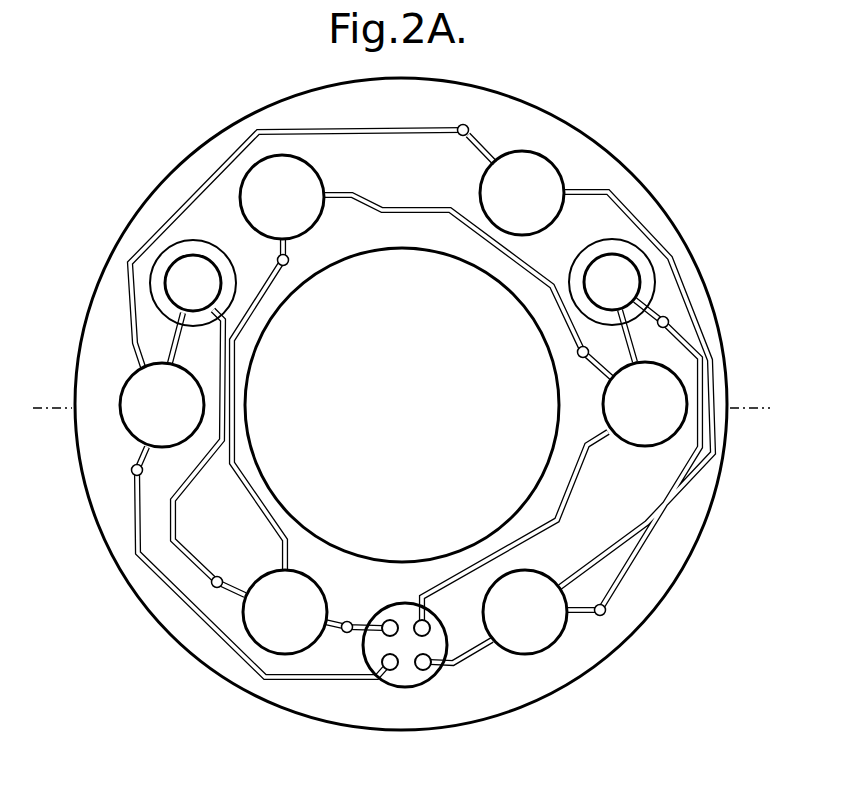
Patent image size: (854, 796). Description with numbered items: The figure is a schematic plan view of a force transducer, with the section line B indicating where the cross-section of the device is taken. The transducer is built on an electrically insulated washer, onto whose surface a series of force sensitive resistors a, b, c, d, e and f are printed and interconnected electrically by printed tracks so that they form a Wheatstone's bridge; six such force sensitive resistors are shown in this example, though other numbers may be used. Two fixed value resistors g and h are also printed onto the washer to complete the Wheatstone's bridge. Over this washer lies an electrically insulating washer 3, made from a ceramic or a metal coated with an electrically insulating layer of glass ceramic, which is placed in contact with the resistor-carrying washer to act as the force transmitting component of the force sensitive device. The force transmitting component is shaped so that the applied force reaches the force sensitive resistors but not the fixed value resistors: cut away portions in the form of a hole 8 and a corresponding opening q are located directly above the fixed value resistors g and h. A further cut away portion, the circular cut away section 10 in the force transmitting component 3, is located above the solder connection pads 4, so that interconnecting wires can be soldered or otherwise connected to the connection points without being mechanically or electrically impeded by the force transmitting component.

The electrically insulating washer 3 is at (322, 697).
The solder connection pads 4 is at (390, 625).
The circular cut away section 10 is at (425, 682).
The hole 8 is at (198, 242).
The guard ring q is at (587, 240).
The force sensitive resistor a is at (300, 607).
The force sensitive resistor b is at (143, 393).
The force sensitive resistor c is at (302, 178).
The force sensitive resistor d is at (522, 167).
The force sensitive resistor e is at (643, 423).
The force sensitive resistor f is at (527, 640).
The fixed value resistor g is at (207, 282).
The fixed value resistor h is at (607, 275).
The section line B- B is at (400, 408).